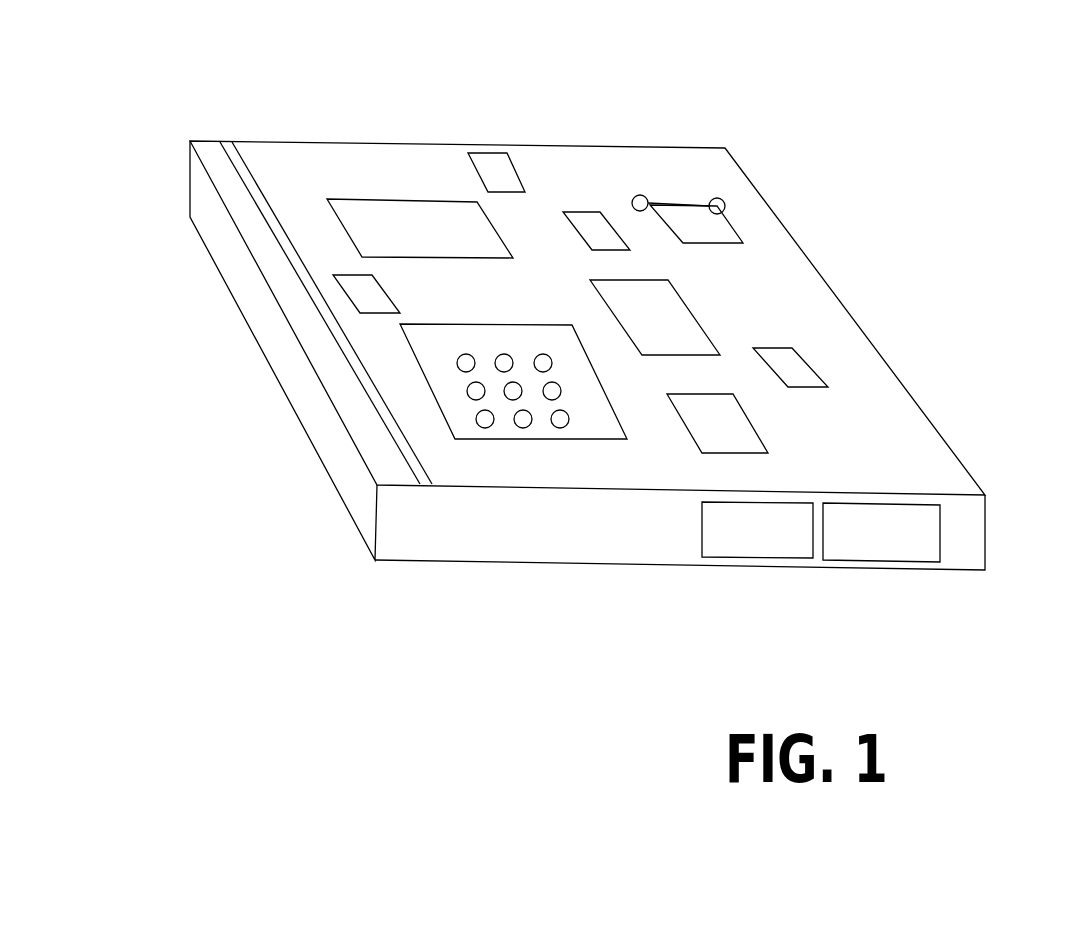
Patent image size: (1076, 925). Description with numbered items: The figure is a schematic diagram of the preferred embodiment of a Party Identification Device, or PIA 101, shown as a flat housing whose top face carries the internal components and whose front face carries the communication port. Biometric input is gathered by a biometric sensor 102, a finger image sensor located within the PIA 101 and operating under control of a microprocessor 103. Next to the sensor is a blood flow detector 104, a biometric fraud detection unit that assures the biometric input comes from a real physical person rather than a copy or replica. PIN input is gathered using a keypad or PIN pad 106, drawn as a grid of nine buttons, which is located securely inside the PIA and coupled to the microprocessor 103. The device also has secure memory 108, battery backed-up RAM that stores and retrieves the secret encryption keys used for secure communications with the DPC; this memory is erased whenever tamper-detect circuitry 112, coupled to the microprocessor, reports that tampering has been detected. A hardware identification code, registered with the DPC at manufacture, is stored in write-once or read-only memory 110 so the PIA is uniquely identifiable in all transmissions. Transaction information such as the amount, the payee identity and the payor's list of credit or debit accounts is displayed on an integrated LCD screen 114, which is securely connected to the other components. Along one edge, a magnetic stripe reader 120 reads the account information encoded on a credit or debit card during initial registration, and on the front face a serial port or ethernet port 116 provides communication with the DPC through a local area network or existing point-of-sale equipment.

The Party Identification Device (PIA) 101 is at (587, 369).
The biometric sensor 102 is at (727, 223).
The microprocessor 103 is at (590, 212).
The blood flow detector 104 is at (720, 200).
The keypad or PIN pad 106 is at (618, 440).
The secure memory 108 is at (700, 318).
The write-once or read-only memory 110 is at (810, 368).
The tamper-detect circuitry 112 is at (487, 155).
The LCD screen 114 is at (498, 228).
The serial port or ethernet port 116 is at (787, 558).
The magnetic stripe reader 120 is at (320, 302).